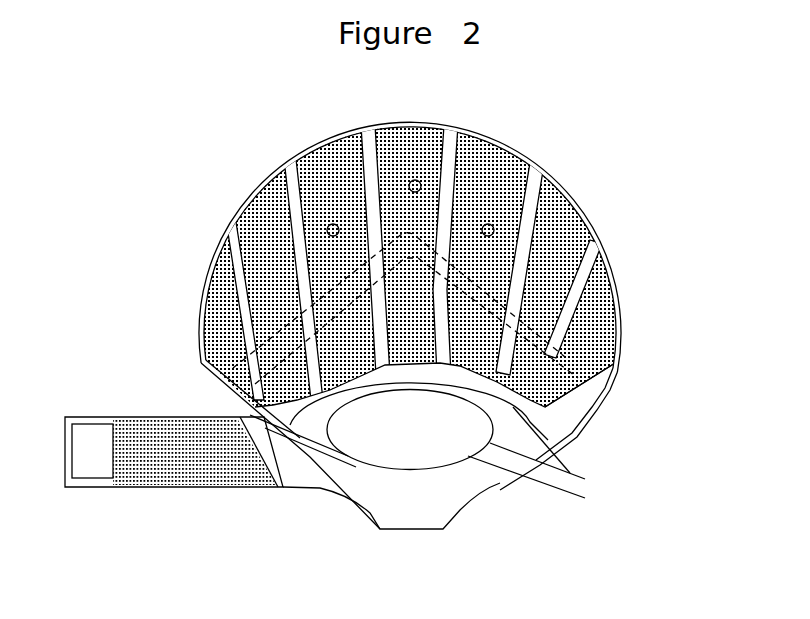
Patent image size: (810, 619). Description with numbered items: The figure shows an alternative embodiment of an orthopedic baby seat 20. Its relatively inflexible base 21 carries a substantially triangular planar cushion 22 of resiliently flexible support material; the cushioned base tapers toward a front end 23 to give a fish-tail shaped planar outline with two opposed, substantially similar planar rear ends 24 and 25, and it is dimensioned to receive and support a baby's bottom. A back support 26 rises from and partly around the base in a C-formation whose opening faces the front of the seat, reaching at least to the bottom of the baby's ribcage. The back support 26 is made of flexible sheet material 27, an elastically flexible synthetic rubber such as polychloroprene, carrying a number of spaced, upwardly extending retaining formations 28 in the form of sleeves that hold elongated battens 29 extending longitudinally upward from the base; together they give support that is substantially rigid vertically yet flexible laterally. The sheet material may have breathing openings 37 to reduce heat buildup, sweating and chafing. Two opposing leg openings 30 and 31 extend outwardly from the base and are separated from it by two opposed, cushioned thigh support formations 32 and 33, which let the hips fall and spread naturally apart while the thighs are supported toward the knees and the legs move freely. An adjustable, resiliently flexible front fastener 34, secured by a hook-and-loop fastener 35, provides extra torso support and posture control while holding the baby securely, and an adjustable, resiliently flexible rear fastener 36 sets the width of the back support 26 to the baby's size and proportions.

The orthopedic baby seat 20 is at (663, 175).
The base 21 is at (480, 465).
The planar cushion 22 is at (395, 435).
The front end 23 is at (416, 500).
The rear end 24 is at (323, 445).
The rear end 25 is at (482, 432).
The back support 26 is at (499, 143).
The flexible sheet material 27 is at (560, 263).
The retaining formations 28 is at (575, 323).
The battens 29 is at (533, 217).
The leg opening 30 is at (318, 432).
The leg opening 31 is at (550, 440).
The thigh support formation 32 is at (357, 440).
The thigh support formation 33 is at (453, 435).
The front fastener 34 is at (177, 443).
The hook-and-loop fastener 35 is at (83, 447).
The rear fastener 36 is at (292, 319).
The breathing openings 37 is at (414, 178).